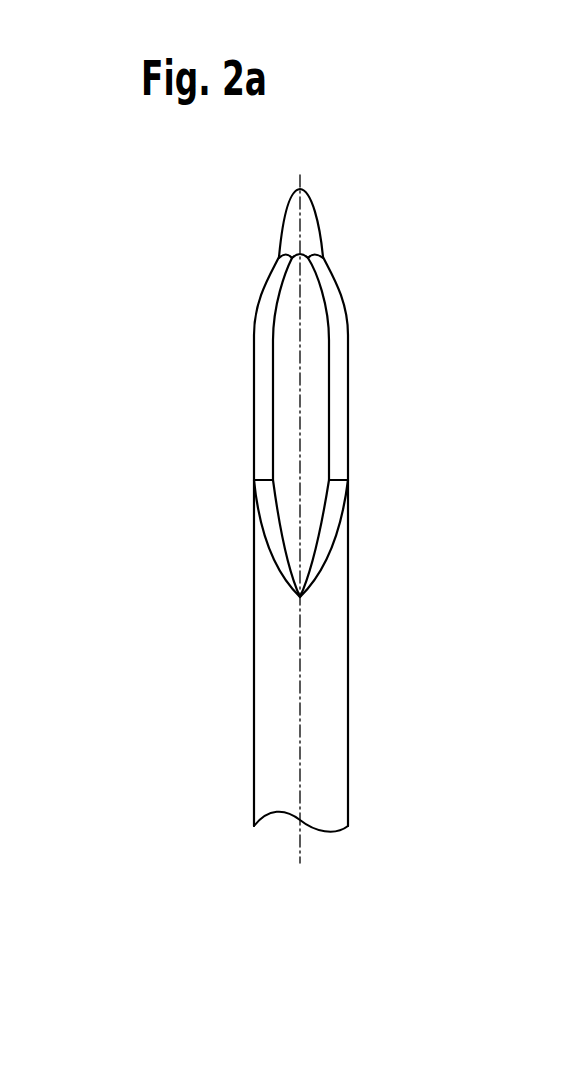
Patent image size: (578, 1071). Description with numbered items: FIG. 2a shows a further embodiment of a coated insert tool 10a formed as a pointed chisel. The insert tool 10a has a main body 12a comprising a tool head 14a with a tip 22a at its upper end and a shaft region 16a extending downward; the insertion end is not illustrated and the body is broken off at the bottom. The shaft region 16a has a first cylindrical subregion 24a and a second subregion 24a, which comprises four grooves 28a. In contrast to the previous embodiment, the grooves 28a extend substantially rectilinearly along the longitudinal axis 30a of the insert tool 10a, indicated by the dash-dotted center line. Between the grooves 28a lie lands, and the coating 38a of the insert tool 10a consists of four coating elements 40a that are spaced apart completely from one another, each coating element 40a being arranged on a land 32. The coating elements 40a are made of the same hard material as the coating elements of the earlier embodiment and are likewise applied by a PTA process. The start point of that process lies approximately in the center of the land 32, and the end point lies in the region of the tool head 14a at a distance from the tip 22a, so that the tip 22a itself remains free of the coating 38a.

The insert tool 10a is at (188, 219).
The main body 12a is at (310, 670).
The tool head 14a is at (206, 320).
The shaft region 16a is at (207, 593).
The tip 22a is at (302, 191).
The subregion 24a is at (207, 460).
The grooves 28a is at (310, 413).
The longitudinal axis 30a is at (300, 174).
The land 32 is at (270, 527).
The coating 38a is at (388, 290).
The coating elements 40a is at (339, 357).